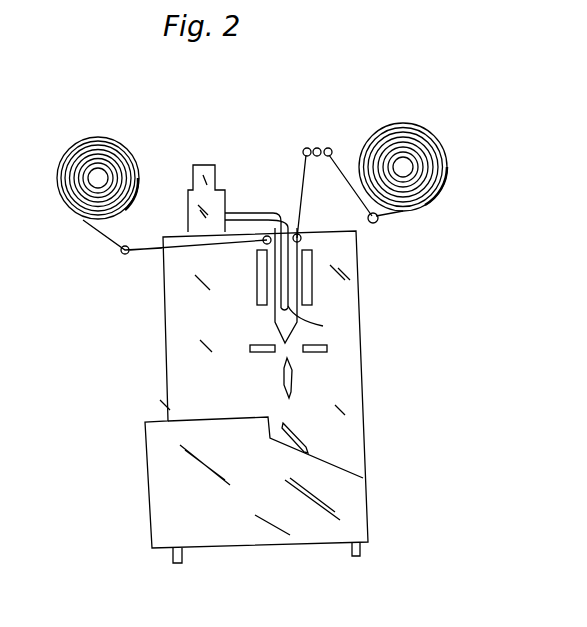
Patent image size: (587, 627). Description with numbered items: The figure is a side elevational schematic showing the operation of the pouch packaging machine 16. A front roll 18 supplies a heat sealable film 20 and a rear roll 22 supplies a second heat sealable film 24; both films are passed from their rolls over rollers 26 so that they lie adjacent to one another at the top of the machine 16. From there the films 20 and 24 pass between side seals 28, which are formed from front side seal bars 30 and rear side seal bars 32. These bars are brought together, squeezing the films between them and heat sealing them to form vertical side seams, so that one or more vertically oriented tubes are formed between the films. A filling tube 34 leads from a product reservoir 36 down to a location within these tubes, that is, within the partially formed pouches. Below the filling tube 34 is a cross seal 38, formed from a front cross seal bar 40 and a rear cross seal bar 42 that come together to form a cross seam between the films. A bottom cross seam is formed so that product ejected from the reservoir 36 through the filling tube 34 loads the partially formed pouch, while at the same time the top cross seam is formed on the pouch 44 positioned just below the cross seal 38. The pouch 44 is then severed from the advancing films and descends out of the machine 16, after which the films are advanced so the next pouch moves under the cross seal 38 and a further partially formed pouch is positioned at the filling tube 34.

The pouch packaging machine 16 is at (364, 266).
The front roll 18 is at (431, 136).
The heat sealable film 20 is at (300, 171).
The rear roll 22 is at (106, 136).
The heat sealable film 24 is at (95, 233).
The rollers 26 is at (328, 148).
The side seals 28 is at (258, 308).
The front side seal bars 30 is at (309, 272).
The rear side seal bars 32 is at (258, 272).
The filling tube 34 is at (321, 320).
The product reservoir 36 is at (199, 165).
The cross seal 38 is at (268, 357).
The front cross seal bar 40 is at (328, 348).
The rear cross seal bar 42 is at (248, 350).
The pouch 44 is at (293, 375).